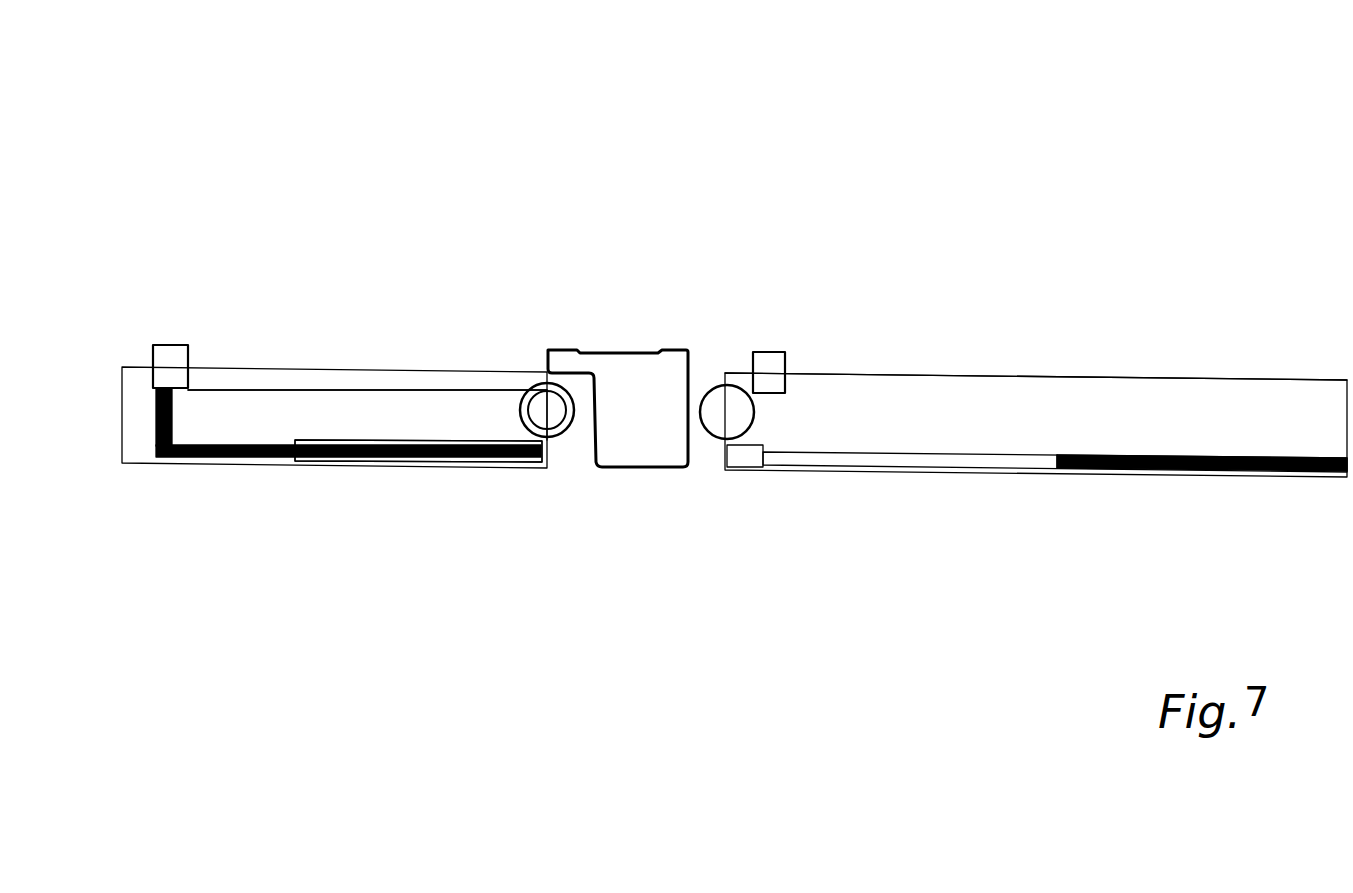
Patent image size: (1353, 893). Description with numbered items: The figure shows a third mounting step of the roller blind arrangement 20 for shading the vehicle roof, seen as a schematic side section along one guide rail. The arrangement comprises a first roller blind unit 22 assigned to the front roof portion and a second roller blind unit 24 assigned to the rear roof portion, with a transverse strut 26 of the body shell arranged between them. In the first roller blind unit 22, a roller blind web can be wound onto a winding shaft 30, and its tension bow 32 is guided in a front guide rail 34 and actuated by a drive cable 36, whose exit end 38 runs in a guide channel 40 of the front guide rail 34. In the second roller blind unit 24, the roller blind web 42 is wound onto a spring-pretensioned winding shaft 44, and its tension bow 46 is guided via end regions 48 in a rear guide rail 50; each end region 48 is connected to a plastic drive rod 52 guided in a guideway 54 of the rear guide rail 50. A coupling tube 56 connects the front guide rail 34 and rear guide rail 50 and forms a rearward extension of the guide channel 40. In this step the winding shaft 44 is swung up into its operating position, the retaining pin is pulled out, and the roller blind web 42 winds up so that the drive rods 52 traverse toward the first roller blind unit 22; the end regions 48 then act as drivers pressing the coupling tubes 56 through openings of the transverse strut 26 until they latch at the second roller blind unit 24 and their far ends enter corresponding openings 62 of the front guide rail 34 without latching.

The roller blind arrangement 20 is at (1069, 140).
The first roller blind unit 22 is at (1045, 379).
The second roller blind unit 24 is at (383, 363).
The transverse strut 26 is at (628, 375).
The winding shaft 30 is at (713, 400).
The tension bow 32 is at (770, 355).
The front guide rail 34 is at (931, 378).
The drive cable 36 is at (1192, 470).
The exit end 38 is at (1069, 468).
The guide channel 40 is at (843, 460).
The roller blind web 42 is at (224, 388).
The winding shaft 44 is at (540, 407).
The tension bow 46 is at (167, 354).
The end region 48 is at (160, 418).
The rear guide rail 50 is at (293, 378).
The drive rod 52 is at (209, 457).
The guideway 54 is at (263, 453).
The coupling tube 56 is at (431, 461).
The opening 62 is at (743, 463).